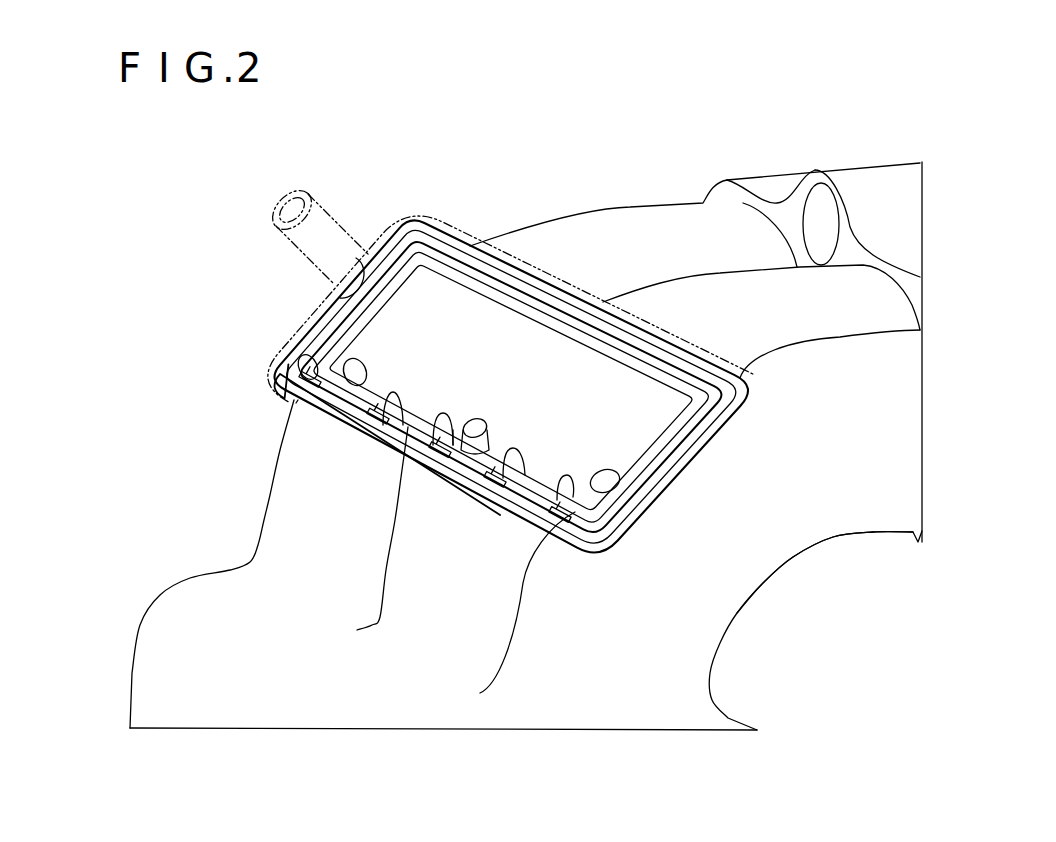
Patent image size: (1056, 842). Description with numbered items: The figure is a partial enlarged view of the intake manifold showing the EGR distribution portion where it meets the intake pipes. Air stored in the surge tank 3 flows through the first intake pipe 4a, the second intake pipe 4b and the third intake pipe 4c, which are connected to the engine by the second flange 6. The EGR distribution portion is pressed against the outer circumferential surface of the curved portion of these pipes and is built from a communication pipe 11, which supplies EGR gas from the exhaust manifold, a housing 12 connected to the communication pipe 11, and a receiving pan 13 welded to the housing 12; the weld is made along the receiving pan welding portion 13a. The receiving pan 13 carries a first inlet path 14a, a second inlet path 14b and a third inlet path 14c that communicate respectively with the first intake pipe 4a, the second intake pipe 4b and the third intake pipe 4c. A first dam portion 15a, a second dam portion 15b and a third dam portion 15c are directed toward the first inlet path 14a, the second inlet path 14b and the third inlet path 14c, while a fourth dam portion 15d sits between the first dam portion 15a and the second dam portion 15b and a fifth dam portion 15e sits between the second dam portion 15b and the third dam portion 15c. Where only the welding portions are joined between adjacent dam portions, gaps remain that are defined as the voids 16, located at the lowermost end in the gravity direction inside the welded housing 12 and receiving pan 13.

The surge tank 3 is at (180, 617).
The first intake pipe 4a is at (833, 515).
The second intake pipe 4b is at (868, 298).
The third intake pipe 4c is at (630, 223).
The second flange 6 is at (890, 192).
The communication pipe 11 is at (324, 203).
The housing 12 is at (393, 210).
The receiving pan 13 is at (547, 280).
The receiving pan welding portion 13a is at (565, 298).
The first inlet path 14a is at (620, 472).
The second inlet path 14b is at (472, 413).
The third inlet path 14c is at (425, 266).
The first dam portion 15a is at (573, 497).
The second dam portion 15b is at (453, 445).
The third dam portion 15c is at (298, 400).
The fourth dam portion 15d is at (525, 475).
The fifth dam portion 15e is at (383, 425).
The voids 16 is at (341, 380).